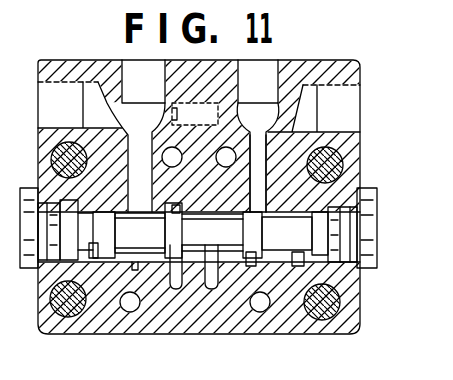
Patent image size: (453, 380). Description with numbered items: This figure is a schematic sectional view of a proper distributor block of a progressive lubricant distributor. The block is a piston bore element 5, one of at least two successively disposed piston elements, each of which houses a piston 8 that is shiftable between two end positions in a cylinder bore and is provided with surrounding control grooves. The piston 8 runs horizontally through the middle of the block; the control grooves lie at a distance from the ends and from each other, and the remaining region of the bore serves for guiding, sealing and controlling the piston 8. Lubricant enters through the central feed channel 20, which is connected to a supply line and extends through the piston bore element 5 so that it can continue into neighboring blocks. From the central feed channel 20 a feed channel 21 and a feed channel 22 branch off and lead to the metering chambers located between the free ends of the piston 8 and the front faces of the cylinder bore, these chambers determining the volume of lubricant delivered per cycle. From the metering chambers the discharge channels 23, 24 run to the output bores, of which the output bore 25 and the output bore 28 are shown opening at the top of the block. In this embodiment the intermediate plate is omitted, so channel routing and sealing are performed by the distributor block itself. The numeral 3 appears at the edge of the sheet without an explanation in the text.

The output bore 25 is at (133, 70).
The output bore 28 is at (258, 72).
The piston bore element 5 is at (338, 67).
The feed channel 22 is at (218, 150).
The feed channel 21 is at (169, 149).
The discharge channel 23 is at (123, 185).
The piston 8 is at (292, 244).
The central feed channel 20 is at (212, 288).
The discharge channel 24 is at (298, 264).
The valve unit 3 is at (447, 324).